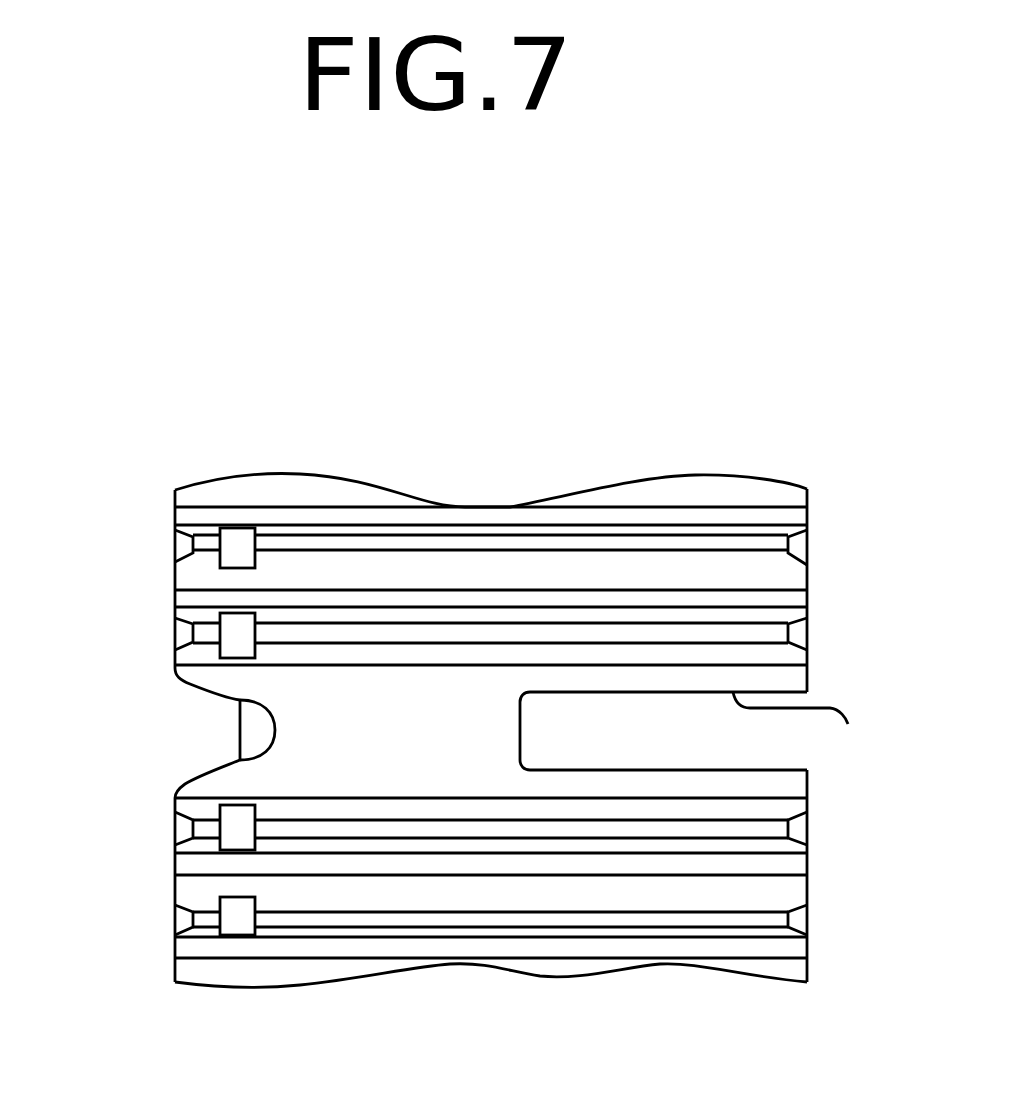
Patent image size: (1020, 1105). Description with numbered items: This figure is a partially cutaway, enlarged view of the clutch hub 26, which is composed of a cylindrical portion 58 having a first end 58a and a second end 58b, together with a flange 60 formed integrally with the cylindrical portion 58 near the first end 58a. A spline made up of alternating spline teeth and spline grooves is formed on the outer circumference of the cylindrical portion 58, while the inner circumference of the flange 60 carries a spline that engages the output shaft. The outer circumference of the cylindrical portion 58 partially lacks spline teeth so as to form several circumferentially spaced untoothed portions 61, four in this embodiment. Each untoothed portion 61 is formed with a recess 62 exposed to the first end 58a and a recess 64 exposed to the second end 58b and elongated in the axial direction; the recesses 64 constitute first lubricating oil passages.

The clutch hub 26 is at (492, 704).
The cylindrical portion 58 is at (343, 512).
The first end 58a is at (176, 572).
The second end 58b is at (807, 572).
The flange 60 is at (240, 750).
The untoothed portion 61 is at (442, 762).
The recess 62 is at (203, 690).
The recess 64 is at (800, 725).